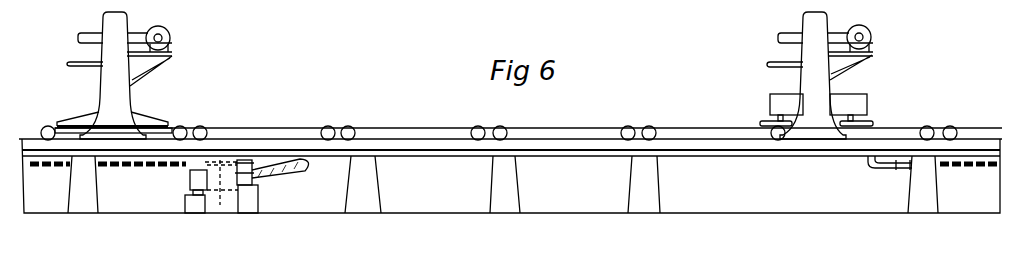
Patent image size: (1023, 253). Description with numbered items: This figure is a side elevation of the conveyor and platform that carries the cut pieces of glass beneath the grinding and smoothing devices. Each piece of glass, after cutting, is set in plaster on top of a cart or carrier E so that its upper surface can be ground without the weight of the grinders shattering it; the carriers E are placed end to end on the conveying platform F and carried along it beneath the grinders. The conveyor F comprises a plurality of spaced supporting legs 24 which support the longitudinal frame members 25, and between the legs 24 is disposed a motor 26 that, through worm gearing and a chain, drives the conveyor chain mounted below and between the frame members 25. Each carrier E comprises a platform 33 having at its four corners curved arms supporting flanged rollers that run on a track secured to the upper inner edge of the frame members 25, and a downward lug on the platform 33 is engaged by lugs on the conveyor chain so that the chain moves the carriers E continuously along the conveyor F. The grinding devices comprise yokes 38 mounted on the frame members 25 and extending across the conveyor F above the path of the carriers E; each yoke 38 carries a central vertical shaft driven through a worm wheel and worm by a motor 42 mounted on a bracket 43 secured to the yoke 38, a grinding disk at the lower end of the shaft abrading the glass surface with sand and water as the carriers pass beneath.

The supporting legs 24 is at (511, 176).
The longitudinal frame members 25 is at (511, 147).
The motor 26 is at (531, 184).
The platform 33 is at (437, 128).
The yoke 38 is at (105, 106).
The motor 42 is at (171, 33).
The bracket 43 is at (141, 73).
The cart or carrier E is at (158, 132).
The conveying platform F is at (510, 120).